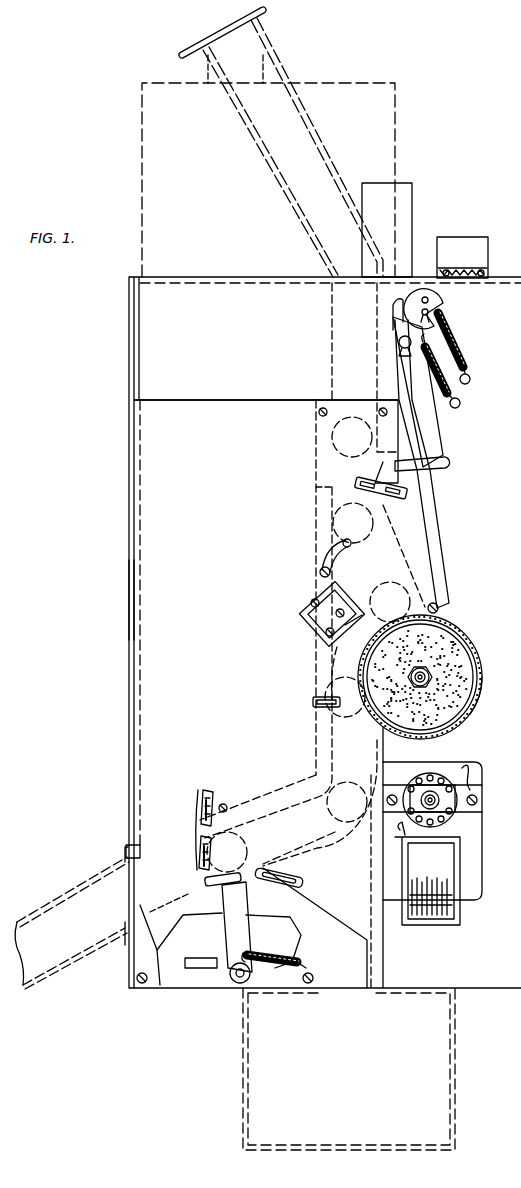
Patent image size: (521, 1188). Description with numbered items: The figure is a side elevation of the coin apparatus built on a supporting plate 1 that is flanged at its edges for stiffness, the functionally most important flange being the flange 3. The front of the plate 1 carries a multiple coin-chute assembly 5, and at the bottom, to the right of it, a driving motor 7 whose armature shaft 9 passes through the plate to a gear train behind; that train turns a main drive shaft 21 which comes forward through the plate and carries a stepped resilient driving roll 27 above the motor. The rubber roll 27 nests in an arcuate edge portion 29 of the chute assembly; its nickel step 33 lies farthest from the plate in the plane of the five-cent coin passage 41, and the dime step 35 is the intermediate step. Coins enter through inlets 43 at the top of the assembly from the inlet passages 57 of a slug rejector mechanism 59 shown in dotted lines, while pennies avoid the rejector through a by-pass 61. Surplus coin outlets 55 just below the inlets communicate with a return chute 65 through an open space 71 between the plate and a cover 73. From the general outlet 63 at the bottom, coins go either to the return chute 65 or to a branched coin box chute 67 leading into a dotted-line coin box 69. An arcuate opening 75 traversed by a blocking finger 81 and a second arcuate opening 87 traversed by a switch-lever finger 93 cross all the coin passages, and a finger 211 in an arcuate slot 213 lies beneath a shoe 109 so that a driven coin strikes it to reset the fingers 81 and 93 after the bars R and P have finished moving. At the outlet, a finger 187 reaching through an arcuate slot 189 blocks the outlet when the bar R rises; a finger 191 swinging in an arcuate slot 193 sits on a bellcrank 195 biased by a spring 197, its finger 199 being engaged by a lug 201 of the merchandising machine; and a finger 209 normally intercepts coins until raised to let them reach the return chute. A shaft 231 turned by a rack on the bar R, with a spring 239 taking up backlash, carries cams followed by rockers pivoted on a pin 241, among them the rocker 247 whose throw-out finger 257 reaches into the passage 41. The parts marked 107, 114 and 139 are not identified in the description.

The supporting plate 1 is at (492, 967).
The flange 3 is at (228, 277).
The multiple coin-chute assembly 5 is at (433, 546).
The driving motor 7 is at (478, 838).
The armature shaft 9 is at (434, 790).
The main drive shaft 21 is at (432, 673).
The stepped resilient driving roll 27 is at (490, 700).
The arcuate edge portion 29 is at (410, 669).
The nickel step 33 is at (470, 643).
The dime step 35 is at (461, 624).
The five-cent coin passage 41 is at (377, 752).
The inlets 43 is at (345, 391).
The surplus coin outlets 55 is at (320, 455).
The inlet passages 57 is at (208, 80).
The slug rejector mechanism 59 is at (134, 156).
The by-pass 61 is at (321, 151).
The general outlet 63 is at (246, 800).
The return chute 65 is at (76, 890).
The branched coin box chute 67 is at (326, 926).
The coin box 69 is at (452, 1080).
The open space 71 is at (245, 587).
The cover 73 is at (150, 612).
The arcuate opening 75 is at (402, 494).
The blocking finger 81 is at (359, 484).
The second arcuate opening 87 is at (340, 560).
The finger 93 is at (351, 546).
The pivot screw 107 is at (321, 581).
The shoe 109 is at (318, 626).
The tilted bracket 114 is at (304, 609).
The contact strip 139 is at (480, 272).
The finger 187 is at (204, 788).
The arcuate slot 189 is at (198, 822).
The finger 191 is at (268, 873).
The arcuate slot 193 is at (301, 888).
The bellcrank 195 is at (232, 982).
The spring 197 is at (283, 966).
The finger 199 is at (200, 972).
The lug 201 is at (166, 949).
The finger 209 is at (201, 797).
The finger 211 is at (322, 699).
The arcuate slot 213 is at (318, 706).
The shaft 231 is at (440, 307).
The spring 239 is at (451, 328).
The pin 241 is at (398, 341).
The rocker 247 is at (425, 416).
The throw-out finger 257 is at (412, 471).
The bar P is at (412, 193).
The bar R is at (470, 243).